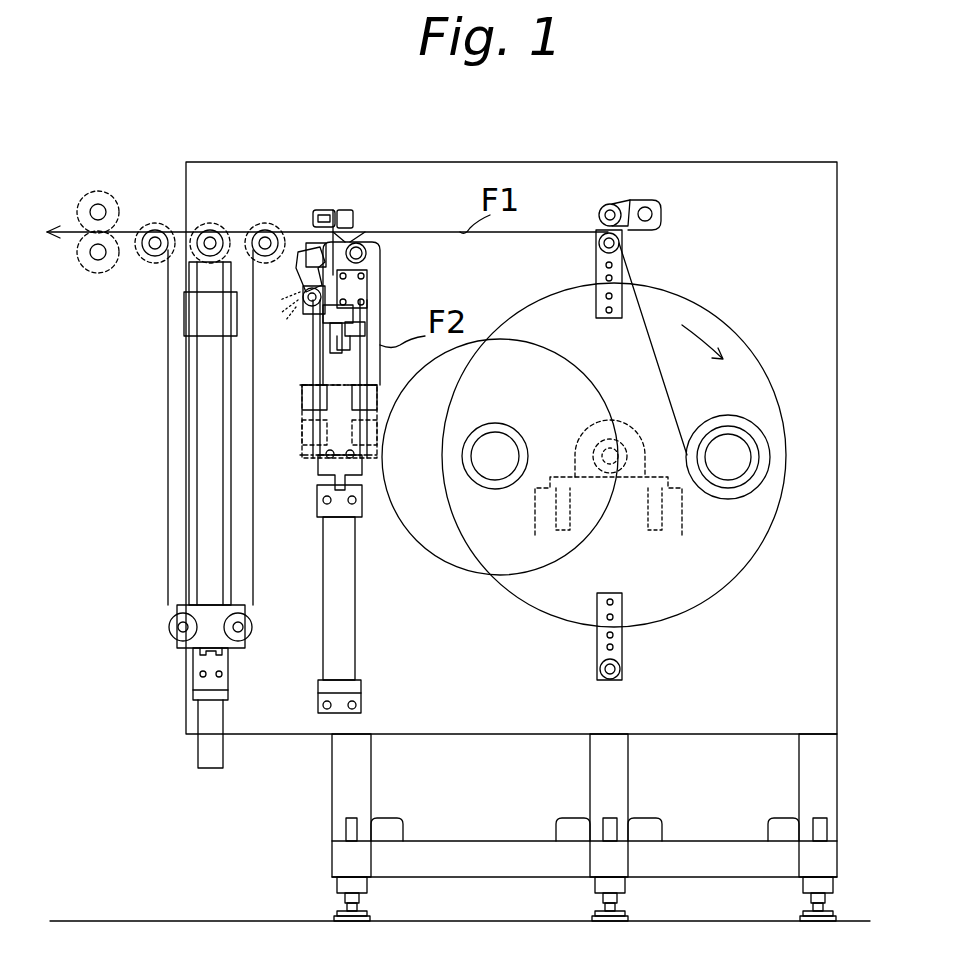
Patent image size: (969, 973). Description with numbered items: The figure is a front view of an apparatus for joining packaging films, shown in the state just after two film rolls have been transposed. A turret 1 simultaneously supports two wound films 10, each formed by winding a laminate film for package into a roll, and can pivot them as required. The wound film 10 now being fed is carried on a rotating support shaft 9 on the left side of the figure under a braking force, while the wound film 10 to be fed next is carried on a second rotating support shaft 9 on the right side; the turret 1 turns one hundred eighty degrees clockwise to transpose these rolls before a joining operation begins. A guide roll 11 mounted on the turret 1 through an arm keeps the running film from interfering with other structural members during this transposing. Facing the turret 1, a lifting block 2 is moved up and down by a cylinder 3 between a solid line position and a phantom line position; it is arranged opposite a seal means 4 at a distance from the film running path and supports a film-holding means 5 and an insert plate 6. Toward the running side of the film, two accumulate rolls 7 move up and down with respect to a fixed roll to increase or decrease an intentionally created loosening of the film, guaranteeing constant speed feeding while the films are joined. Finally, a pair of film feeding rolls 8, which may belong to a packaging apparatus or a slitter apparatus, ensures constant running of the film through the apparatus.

The turret 1 is at (720, 320).
The lifting block 2 is at (390, 270).
The cylinder 3 is at (356, 640).
The seal means 4 is at (323, 210).
The film-holding means 5 is at (315, 250).
The insert plate 6 is at (360, 240).
The accumulate rolls 7 is at (170, 627).
The film feeding rolls 8 is at (114, 187).
The rotating support shaft 9 is at (495, 468).
The wound film 10 is at (438, 560).
The guide roll 11 is at (622, 246).